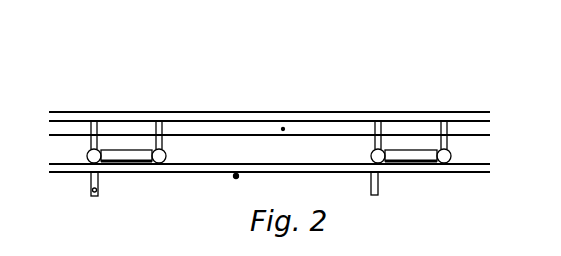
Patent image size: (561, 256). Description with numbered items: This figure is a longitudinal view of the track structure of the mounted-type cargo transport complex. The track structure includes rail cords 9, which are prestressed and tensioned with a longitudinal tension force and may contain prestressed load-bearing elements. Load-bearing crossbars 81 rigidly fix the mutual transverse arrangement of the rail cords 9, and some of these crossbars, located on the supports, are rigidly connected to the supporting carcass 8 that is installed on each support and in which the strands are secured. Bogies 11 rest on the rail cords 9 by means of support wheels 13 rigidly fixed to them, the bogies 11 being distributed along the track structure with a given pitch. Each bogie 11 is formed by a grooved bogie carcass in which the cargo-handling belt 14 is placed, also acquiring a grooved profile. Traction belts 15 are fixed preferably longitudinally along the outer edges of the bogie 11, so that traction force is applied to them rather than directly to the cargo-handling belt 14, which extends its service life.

The traction belt 15 is at (75, 112).
The support wheel 13 is at (408, 111).
The cargo-handling belt 14 is at (283, 129).
The rail cord 9 is at (324, 168).
The carcass 8 is at (156, 133).
The bogie 11 is at (112, 153).
The load-bearing crossbar 81 is at (236, 176).